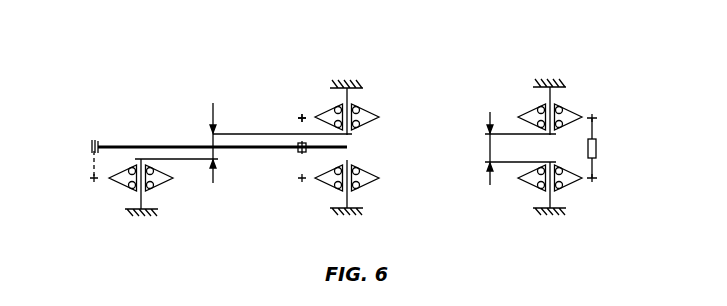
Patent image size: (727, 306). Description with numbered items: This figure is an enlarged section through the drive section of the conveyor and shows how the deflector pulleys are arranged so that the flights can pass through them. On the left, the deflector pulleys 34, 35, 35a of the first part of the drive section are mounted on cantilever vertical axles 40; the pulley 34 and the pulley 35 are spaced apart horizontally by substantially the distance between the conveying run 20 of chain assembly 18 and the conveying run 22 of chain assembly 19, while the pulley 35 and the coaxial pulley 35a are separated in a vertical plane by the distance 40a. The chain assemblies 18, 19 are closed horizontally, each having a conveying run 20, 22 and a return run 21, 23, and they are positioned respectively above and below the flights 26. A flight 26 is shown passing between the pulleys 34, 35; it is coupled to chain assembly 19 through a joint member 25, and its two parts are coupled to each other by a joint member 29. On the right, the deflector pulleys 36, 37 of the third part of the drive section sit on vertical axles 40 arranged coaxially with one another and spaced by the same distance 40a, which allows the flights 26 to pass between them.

The chain assembly 18 is at (302, 117).
The chain assembly 19 is at (91, 178).
The conveying run 20 is at (298, 121).
The return run 21 is at (598, 118).
The conveying run 22 is at (92, 176).
The return run 23 is at (598, 178).
The joint member 25 is at (91, 143).
The flight 26 is at (135, 147).
The joint member 29 is at (297, 153).
The deflector pulley 34 is at (166, 181).
The deflector pulley 35 is at (365, 122).
The deflector pulley 35a is at (366, 183).
The deflector pulley 36 is at (579, 116).
The deflector pulley 37 is at (570, 180).
The vertical axle 40 is at (126, 207).
The vertical distance 40a is at (211, 133).